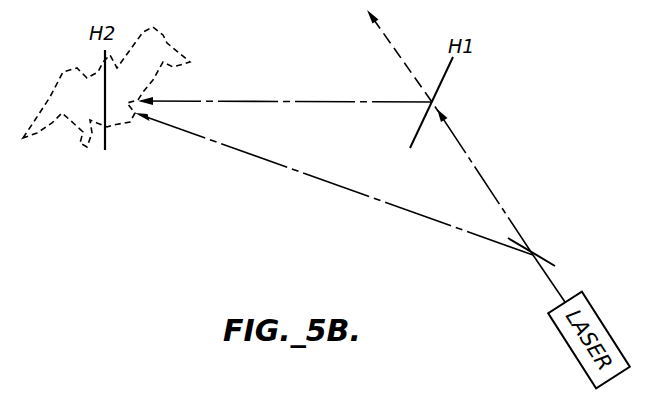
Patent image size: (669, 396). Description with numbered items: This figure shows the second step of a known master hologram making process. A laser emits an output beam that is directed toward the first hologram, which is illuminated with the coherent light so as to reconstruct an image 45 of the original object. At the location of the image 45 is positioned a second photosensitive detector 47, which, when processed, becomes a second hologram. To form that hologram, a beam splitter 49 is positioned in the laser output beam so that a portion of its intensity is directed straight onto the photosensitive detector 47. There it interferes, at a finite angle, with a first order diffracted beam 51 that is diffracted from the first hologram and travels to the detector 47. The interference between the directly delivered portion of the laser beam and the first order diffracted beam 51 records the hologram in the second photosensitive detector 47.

The image 45 is at (167, 42).
The second photosensitive detector 47 is at (105, 124).
The beam splitter 49 is at (540, 253).
The first order diffracted beam 51 is at (300, 100).